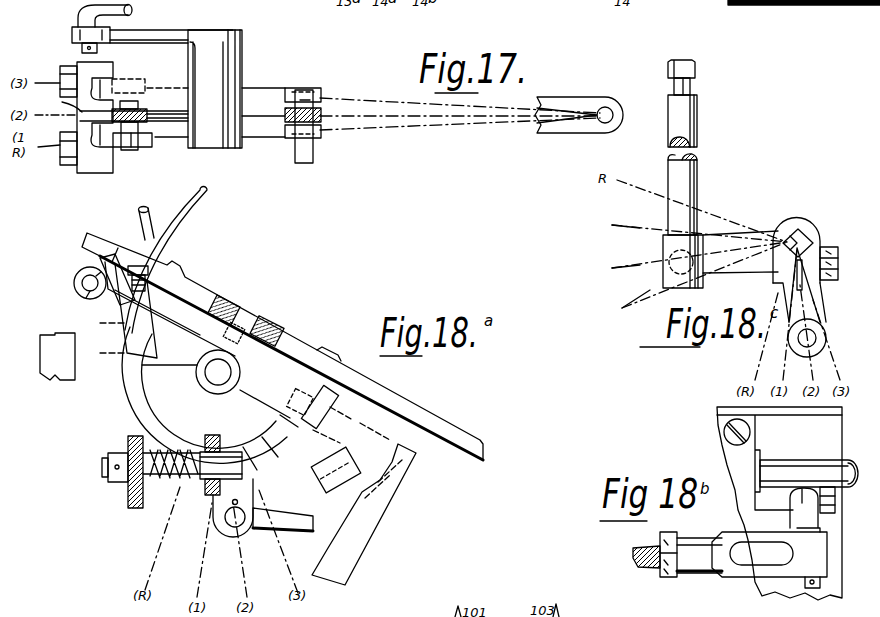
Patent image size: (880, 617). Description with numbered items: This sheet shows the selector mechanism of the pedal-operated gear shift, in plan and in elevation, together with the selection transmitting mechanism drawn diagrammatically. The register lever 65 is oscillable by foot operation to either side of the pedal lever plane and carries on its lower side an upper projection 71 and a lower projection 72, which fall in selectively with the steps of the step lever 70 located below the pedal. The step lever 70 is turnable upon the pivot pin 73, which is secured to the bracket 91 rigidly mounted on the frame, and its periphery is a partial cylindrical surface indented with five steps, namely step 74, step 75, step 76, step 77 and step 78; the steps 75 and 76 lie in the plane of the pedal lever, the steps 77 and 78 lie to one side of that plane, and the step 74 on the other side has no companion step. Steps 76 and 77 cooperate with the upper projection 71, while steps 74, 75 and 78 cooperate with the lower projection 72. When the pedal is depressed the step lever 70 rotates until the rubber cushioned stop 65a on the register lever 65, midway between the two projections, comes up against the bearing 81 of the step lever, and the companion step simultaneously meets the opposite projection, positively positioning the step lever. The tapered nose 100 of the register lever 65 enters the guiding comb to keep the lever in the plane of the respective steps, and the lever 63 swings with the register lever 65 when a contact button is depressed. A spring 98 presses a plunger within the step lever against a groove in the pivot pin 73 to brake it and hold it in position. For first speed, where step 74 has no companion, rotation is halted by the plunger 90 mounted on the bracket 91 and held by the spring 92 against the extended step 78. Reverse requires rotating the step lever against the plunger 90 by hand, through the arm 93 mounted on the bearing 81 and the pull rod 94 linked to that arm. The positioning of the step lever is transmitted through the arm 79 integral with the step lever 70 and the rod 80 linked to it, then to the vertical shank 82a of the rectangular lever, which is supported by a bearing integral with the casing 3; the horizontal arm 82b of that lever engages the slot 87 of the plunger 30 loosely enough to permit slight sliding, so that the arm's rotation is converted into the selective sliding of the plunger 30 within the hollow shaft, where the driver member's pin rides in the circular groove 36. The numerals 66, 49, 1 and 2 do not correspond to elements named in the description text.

In FIG. 17, the arm 93 is at (143, 30).
In FIG. 18A, the arm 93 is at (82, 300).
In FIG. 17, the bearing 81 is at (243, 48).
In FIG. 18A, the bearing 81 is at (240, 368).
In FIG. 18C, the bearing 81 is at (820, 313).
In FIG. 18B, the bearing 81 is at (833, 515).
In FIG. 17, the spring 98 is at (98, 174).
In FIG. 17, the tapered nose 100 is at (60, 102).
In FIG. 17, the step lever 70 is at (177, 142).
In FIG. 18A, the step lever 70 is at (123, 401).
In FIG. 17, the step 76 is at (140, 108).
In FIG. 18A, the step 76 is at (46, 370).
In FIG. 17, the upper projection 71 is at (140, 124).
In FIG. 18A, the upper projection 71 is at (172, 314).
In FIG. 17, the step 77 is at (130, 148).
In FIG. 18A, the step 77 is at (80, 307).
In FIG. 17, the step 78 is at (313, 142).
In FIG. 18A, the step 78 is at (270, 458).
In FIG. 17, the step 74 is at (297, 88).
In FIG. 18A, the step 74 is at (290, 398).
In FIG. 17, the step 75 is at (318, 102).
In FIG. 18A, the step 75 is at (290, 438).
In FIG. 17, the lower projection 72 is at (322, 113).
In FIG. 18A, the lower projection 72 is at (334, 395).
In FIG. 17, the register lever 65 is at (560, 97).
In FIG. 18A, the register lever 65 is at (388, 360).
In FIG. 17, the pivot pin 66 is at (614, 108).
In FIG. 18A, the lever 63 is at (160, 238).
In FIG. 18A, the pull rod 94 is at (138, 218).
In FIG. 18A, the rubber cushioned stop 65a is at (270, 322).
In FIG. 18A, the pivot pin 73 is at (205, 378).
In FIG. 18A, the bracket 91 is at (128, 498).
In FIG. 18A, the spring 92 is at (172, 480).
In FIG. 18A, the plunger 90 is at (203, 487).
In FIG. 18A, the arm 79 is at (230, 530).
In FIG. 18A, the rod 80 is at (292, 531).
In FIG. 18B, the rod 80 is at (645, 568).
In FIG. 18C, the circular groove 36 is at (695, 87).
In FIG. 18C, the plunger 30 is at (700, 167).
In FIG. 18C, the slot 87 is at (663, 248).
In FIG. 18C, the vertical shank 82a is at (813, 240).
In FIG. 18C, the horizontal arm 82b is at (769, 233).
In FIG. 18B, the pin 49 is at (775, 460).
In FIG. 18C, the casing 3 is at (626, 303).
In FIG. 18B, the casing 3 is at (842, 427).
In FIG. 18C, the position line 1 is at (618, 225).
In FIG. 18C, the position line 2 is at (618, 268).